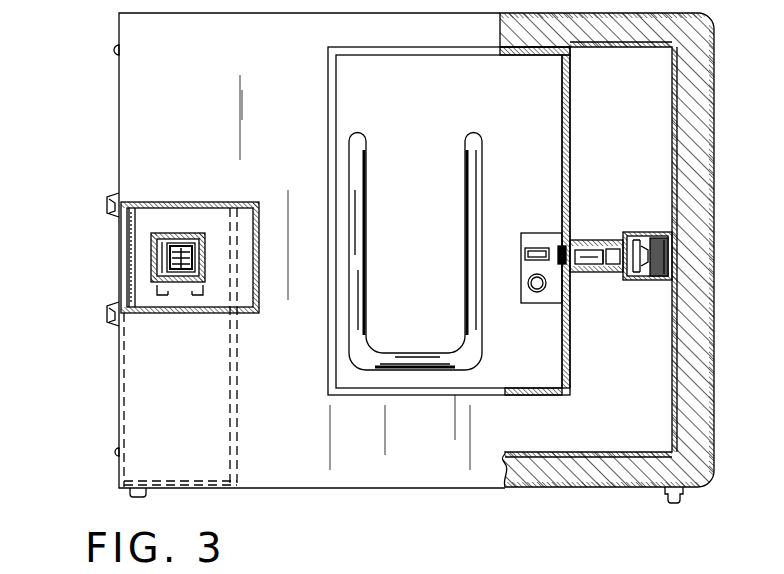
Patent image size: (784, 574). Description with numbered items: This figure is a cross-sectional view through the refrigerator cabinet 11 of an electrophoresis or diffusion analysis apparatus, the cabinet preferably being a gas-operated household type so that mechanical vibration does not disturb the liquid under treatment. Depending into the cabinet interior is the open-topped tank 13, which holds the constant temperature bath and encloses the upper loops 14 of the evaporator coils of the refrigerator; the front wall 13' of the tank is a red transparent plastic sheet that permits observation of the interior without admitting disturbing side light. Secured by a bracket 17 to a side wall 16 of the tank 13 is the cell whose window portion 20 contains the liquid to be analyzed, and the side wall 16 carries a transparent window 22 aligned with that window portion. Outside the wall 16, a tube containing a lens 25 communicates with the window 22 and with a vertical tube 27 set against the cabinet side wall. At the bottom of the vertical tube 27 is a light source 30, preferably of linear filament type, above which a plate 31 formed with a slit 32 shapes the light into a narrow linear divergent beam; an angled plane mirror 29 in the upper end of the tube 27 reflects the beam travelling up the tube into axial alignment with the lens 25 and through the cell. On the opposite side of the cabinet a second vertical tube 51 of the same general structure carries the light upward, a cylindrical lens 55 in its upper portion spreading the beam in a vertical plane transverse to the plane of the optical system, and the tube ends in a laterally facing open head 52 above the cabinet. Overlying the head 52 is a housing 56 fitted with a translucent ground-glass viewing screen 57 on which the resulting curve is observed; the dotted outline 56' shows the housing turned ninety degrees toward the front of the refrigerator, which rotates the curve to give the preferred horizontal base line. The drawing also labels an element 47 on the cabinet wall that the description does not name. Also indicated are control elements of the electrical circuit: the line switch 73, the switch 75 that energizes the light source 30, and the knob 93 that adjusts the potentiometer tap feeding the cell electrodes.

The refrigerator cabinet 11 is at (437, 490).
The tank 13 is at (474, 221).
The colored transparent front wall 13' is at (536, 409).
The upper loops of evaporator coils 14 is at (470, 213).
The side wall of tank 16 is at (571, 98).
The bracket 17 is at (560, 300).
The window portion of cell 20 is at (530, 250).
The transparent window 22 is at (560, 250).
The lens 25 is at (598, 272).
The vertical tube 27 is at (652, 237).
The angled plane mirror 29 is at (664, 280).
The light source 30 is at (634, 242).
The plate 31 is at (642, 277).
The slit 32 is at (655, 277).
The lower hinge 47 is at (112, 322).
The vertical tube 51 is at (197, 256).
The laterally facing open head 52 is at (153, 236).
The cylindrical lens 55 is at (174, 286).
The housing 56 is at (190, 238).
The housing in reoriented position 56' is at (221, 347).
The translucent viewing screen 57 is at (128, 250).
The line switch 73 is at (116, 50).
The switch 75 is at (114, 456).
The knob 93 is at (112, 196).